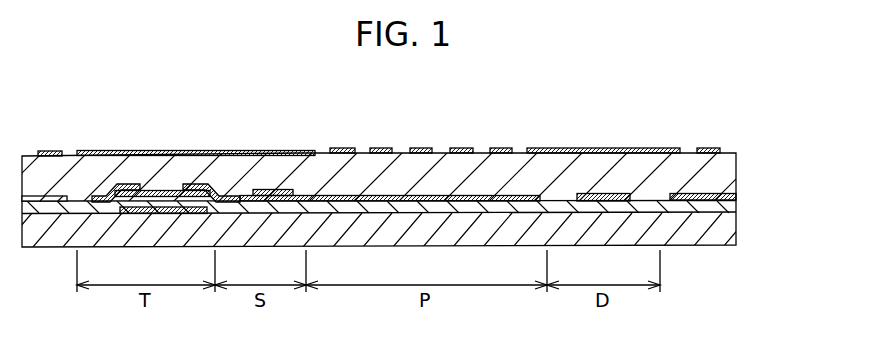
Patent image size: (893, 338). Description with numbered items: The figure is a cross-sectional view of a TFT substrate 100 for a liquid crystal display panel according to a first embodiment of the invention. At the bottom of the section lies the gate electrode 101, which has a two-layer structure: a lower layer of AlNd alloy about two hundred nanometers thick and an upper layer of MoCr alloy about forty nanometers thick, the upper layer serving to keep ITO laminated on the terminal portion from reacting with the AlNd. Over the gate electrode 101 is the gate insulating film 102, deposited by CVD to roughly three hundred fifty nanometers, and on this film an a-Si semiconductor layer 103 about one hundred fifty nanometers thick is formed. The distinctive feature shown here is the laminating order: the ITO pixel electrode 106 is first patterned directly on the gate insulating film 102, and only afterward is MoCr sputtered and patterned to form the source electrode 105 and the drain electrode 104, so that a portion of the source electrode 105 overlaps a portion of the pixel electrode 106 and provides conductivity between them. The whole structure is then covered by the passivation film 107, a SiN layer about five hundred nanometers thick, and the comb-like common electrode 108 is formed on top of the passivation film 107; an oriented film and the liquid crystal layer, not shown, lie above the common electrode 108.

The TFT substrate 100 is at (727, 231).
The gate electrode 101 is at (164, 214).
The gate insulating film 102 is at (727, 208).
The semiconductor layer 103 is at (166, 190).
The drain electrode 104 is at (124, 184).
The source electrode 105 is at (229, 196).
The pixel electrode 106 is at (406, 201).
The passivation film 107 is at (727, 175).
The common electrode 108 is at (708, 148).